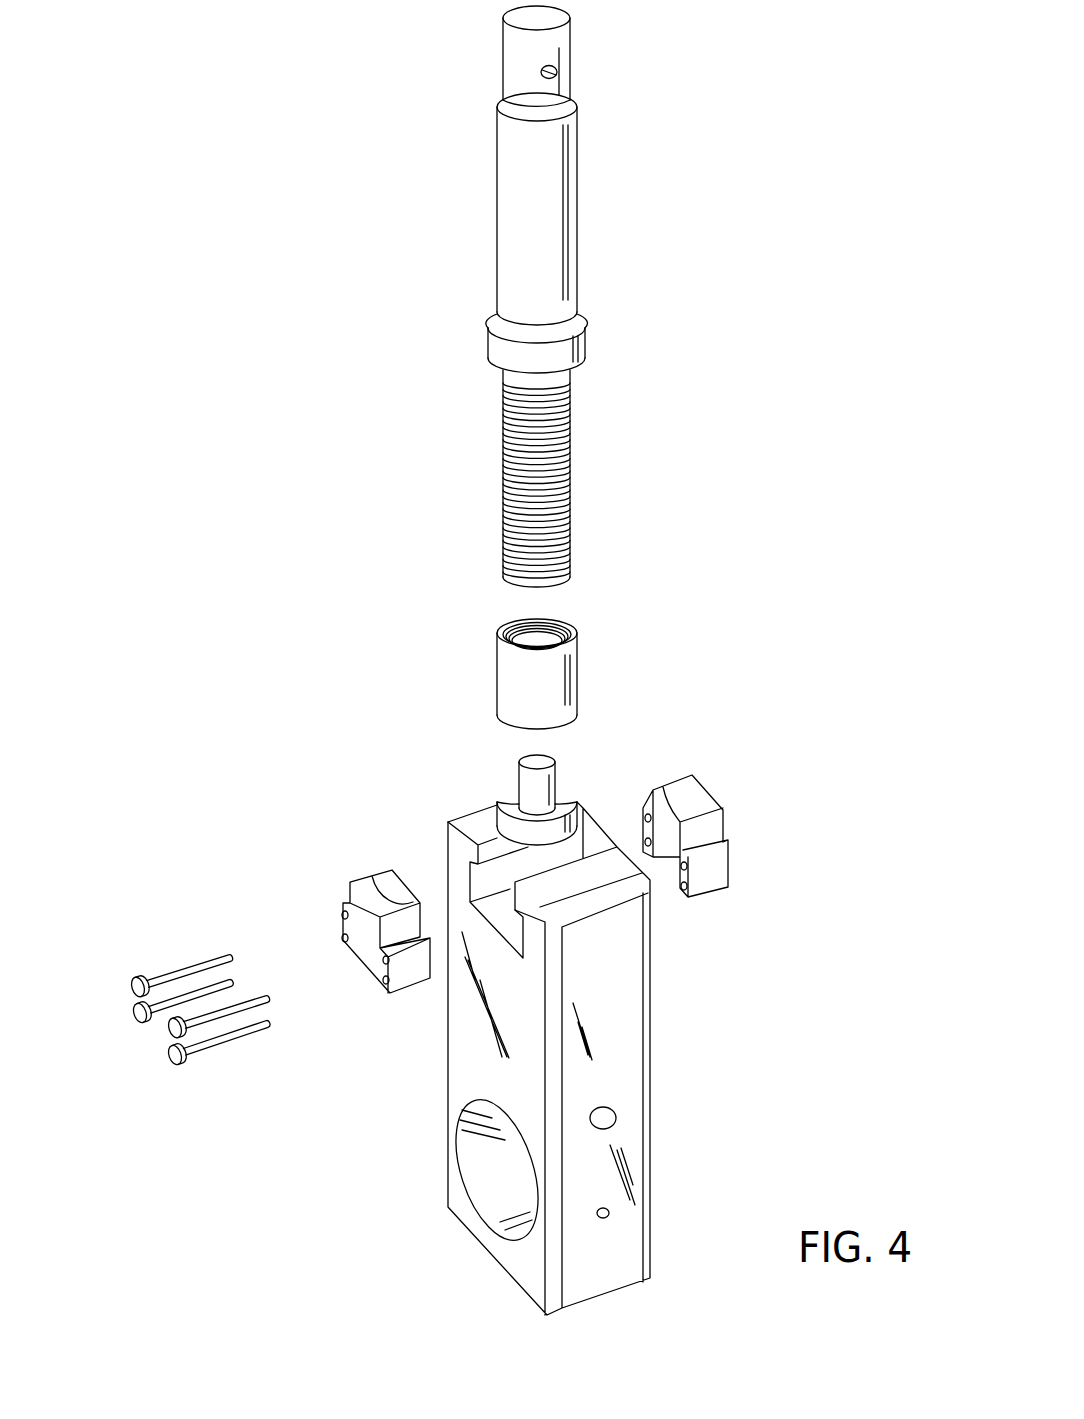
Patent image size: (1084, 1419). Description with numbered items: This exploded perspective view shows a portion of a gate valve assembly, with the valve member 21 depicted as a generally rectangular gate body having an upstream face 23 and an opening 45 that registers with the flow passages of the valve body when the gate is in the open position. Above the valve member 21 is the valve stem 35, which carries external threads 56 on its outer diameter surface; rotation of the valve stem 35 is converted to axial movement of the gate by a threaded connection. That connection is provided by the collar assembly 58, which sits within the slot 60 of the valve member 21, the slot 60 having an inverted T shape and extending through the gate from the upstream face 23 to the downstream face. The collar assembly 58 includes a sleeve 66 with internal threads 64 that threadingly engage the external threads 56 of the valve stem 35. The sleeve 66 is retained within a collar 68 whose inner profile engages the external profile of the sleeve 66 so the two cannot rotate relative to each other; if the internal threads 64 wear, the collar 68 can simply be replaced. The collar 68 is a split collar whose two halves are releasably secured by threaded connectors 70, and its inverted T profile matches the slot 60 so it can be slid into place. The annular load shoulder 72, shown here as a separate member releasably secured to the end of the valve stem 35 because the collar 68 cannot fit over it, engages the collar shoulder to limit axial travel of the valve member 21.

The valve member 21 is at (628, 1007).
The upstream face 23 is at (472, 1050).
The valve stem 35 is at (577, 220).
The opening 45 is at (500, 1200).
The external threads 56 is at (570, 503).
The collar assembly 58 is at (718, 690).
The slot 60 is at (503, 912).
The internal threads 64 is at (543, 615).
The sleeve 66 is at (513, 692).
The collar 68 is at (705, 798).
The threaded connectors 70 is at (192, 965).
The load shoulder 72 is at (562, 795).